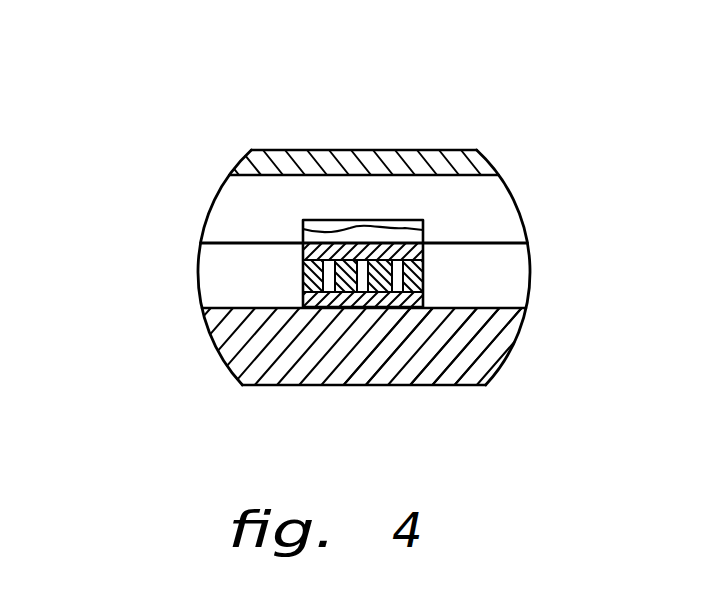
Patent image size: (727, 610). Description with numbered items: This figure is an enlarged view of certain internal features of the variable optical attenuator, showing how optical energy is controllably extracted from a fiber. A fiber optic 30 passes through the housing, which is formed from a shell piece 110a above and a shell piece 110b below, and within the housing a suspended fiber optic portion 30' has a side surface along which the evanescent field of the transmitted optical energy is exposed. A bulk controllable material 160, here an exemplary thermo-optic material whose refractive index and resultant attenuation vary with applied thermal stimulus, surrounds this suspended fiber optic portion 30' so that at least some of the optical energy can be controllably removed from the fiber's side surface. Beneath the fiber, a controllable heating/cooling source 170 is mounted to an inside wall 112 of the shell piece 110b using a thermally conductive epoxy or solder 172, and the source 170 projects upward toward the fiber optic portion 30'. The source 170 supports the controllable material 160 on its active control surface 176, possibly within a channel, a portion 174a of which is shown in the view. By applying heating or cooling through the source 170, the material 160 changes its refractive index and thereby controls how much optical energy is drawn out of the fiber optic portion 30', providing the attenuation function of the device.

The fiber optic 30 is at (292, 213).
The fiber optic portion 30' is at (345, 161).
The shell piece 110a is at (387, 150).
The shell piece 110b is at (418, 385).
The inside wall 112 is at (275, 296).
The controllable material 160 is at (423, 229).
The controllable heating/cooling source 170 is at (423, 263).
The epoxy or solder 172 is at (418, 307).
The channel portion 174a is at (413, 220).
The active control surface 176 is at (337, 335).